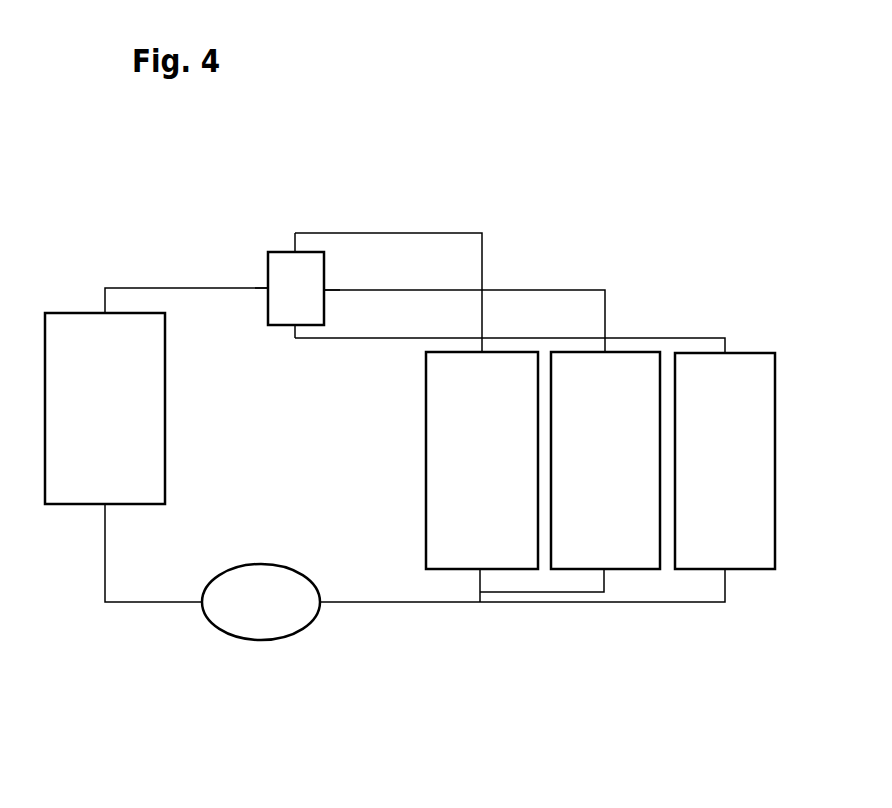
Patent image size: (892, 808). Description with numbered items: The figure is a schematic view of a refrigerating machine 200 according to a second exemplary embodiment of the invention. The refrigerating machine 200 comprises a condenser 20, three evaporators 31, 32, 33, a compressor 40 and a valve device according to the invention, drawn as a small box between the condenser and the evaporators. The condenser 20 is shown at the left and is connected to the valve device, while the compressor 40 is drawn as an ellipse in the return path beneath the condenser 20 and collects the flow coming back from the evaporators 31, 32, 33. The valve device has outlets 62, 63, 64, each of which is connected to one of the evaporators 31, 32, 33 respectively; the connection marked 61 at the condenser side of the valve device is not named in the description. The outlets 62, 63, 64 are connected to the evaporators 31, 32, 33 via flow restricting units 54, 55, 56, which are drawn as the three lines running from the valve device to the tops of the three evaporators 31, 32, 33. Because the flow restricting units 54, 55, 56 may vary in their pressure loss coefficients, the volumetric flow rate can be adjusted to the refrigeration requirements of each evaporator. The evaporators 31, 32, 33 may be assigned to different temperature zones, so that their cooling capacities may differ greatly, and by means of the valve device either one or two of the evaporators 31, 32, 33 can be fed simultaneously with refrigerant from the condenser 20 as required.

The refrigerating machine 200 is at (418, 158).
The condenser 20 is at (75, 348).
The compressor 40 is at (272, 630).
The evaporator 31 is at (465, 552).
The evaporator 32 is at (628, 552).
The evaporator 33 is at (752, 552).
The flow restricting unit 54 is at (447, 233).
The flow restricting unit 55 is at (548, 290).
The flow restricting unit 56 is at (660, 338).
The valve inlet port 61 is at (268, 288).
The outlet 62 is at (295, 252).
The outlet 63 is at (325, 289).
The outlet 64 is at (295, 325).